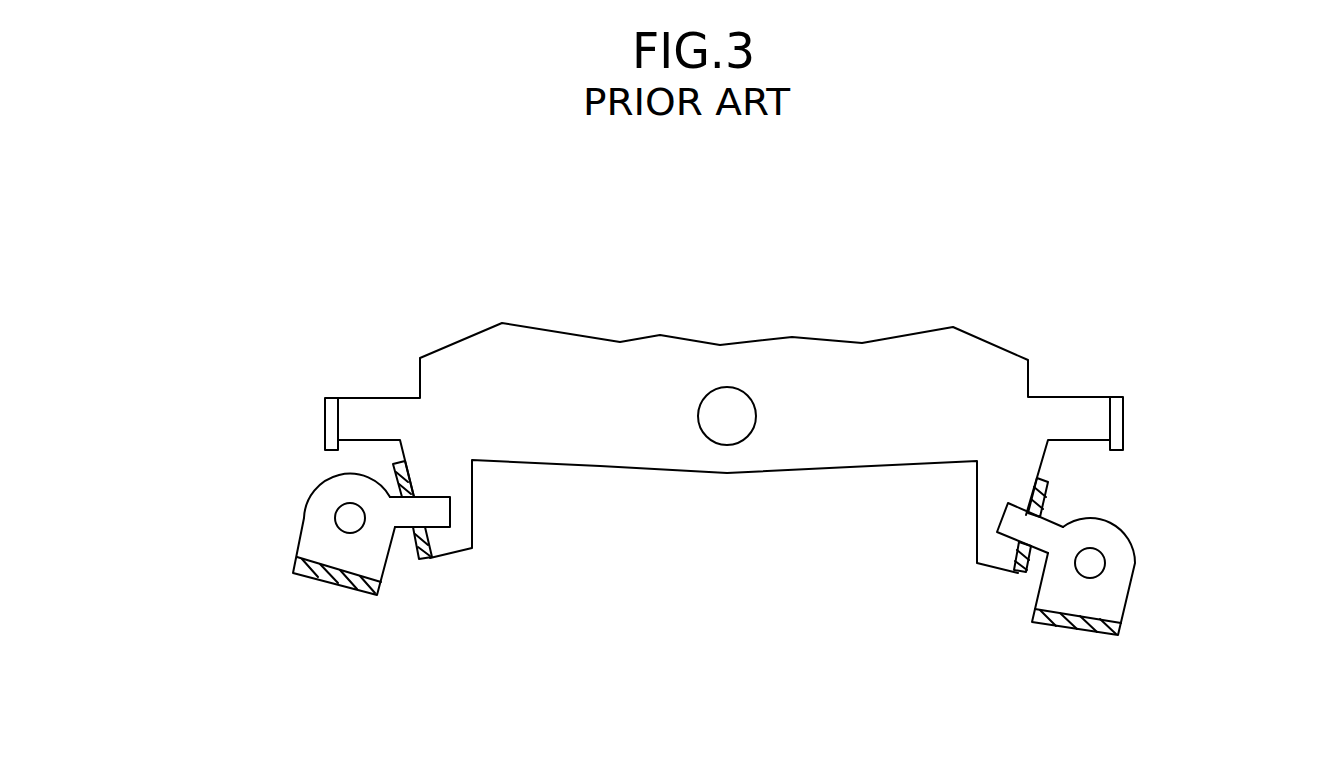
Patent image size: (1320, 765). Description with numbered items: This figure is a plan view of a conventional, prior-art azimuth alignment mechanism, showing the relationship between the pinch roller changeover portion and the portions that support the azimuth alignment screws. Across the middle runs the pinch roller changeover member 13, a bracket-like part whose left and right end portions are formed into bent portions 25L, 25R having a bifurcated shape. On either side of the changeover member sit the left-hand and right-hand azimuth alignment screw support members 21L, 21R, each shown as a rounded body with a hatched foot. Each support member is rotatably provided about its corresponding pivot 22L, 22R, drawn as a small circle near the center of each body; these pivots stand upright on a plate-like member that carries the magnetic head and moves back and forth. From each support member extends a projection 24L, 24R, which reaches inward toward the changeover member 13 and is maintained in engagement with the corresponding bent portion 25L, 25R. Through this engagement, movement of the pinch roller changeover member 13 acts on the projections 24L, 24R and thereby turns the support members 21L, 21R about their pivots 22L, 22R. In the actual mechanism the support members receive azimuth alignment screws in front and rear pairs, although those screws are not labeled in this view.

The pinch roller changeover member 13 is at (632, 455).
The left-hand azimuth alignment screw support member 21L is at (317, 490).
The left pivot 22L is at (350, 518).
The left projection 24L is at (450, 510).
The left bent portion 25L is at (428, 560).
The right-hand azimuth alignment screw support member 21R is at (1127, 603).
The right pivot 22R is at (1090, 563).
The right projection 24R is at (1005, 533).
The right bent portion 25R is at (1048, 485).